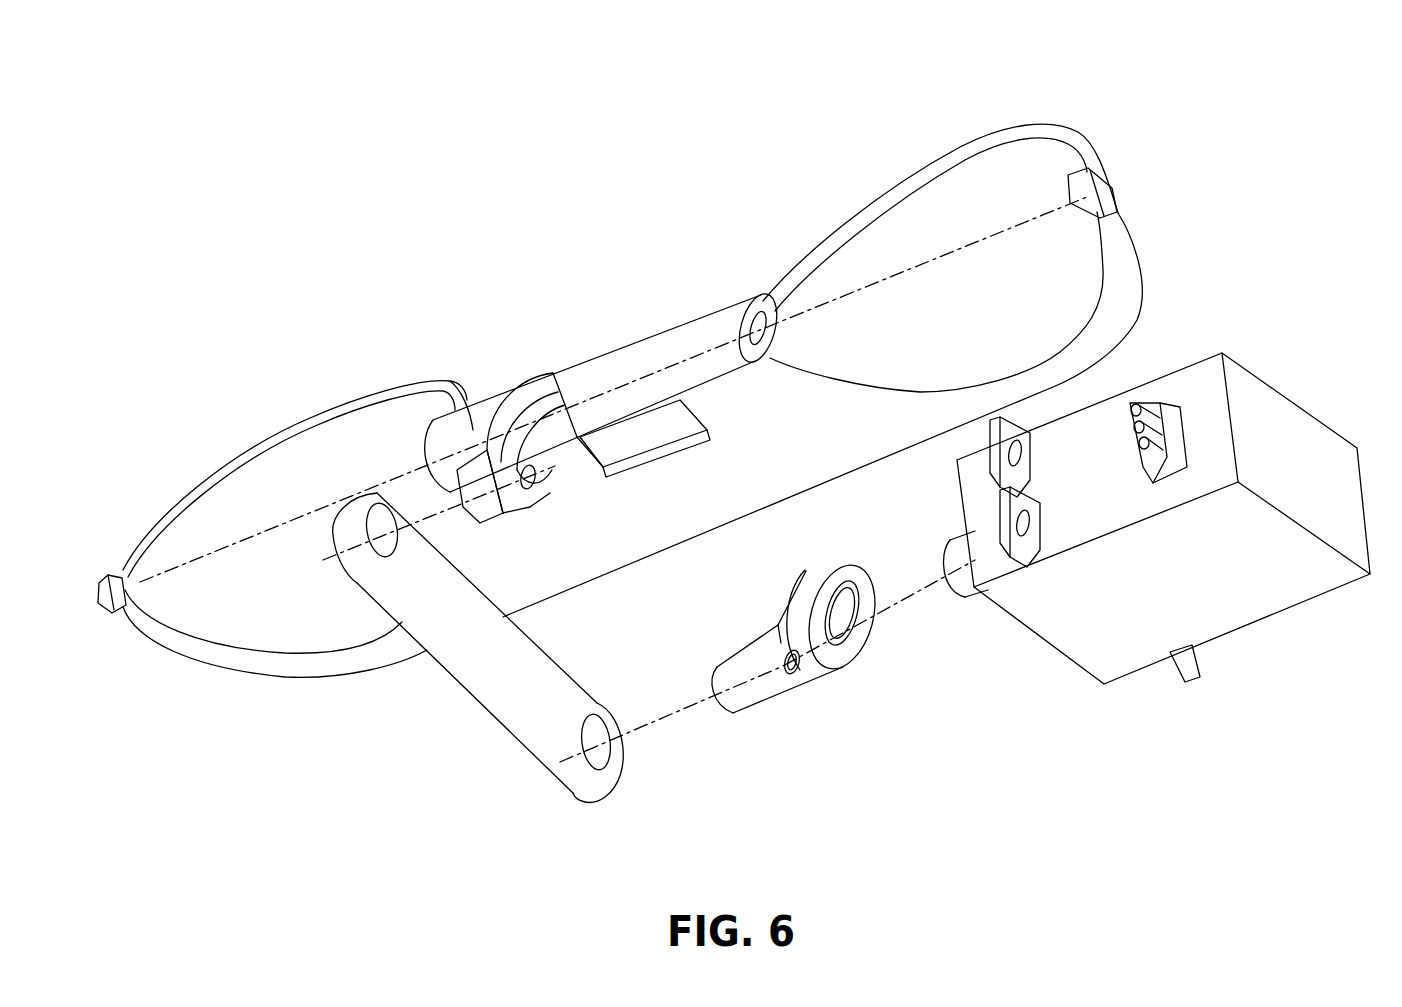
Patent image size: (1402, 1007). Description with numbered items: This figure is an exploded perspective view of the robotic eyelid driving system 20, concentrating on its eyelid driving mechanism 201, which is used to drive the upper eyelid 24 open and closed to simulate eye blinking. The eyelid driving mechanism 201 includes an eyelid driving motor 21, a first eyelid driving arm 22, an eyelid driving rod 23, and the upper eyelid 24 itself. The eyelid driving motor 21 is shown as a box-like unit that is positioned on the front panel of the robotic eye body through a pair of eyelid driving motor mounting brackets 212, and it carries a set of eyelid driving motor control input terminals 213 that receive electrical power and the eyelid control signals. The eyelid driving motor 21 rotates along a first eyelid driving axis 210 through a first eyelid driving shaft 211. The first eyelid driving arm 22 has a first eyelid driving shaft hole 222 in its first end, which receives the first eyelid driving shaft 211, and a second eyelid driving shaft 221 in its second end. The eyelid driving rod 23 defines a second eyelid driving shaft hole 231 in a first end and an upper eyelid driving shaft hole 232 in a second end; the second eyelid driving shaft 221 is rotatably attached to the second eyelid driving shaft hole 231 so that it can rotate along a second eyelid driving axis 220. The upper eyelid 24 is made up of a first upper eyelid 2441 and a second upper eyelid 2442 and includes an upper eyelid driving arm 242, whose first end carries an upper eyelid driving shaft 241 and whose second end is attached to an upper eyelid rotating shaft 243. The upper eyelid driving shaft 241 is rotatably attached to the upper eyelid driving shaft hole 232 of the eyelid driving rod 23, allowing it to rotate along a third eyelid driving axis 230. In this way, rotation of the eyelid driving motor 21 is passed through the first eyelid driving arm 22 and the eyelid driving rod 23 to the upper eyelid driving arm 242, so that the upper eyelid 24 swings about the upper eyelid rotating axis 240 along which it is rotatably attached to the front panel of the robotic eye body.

The robotic eyelid driving system 20 is at (143, 98).
The eyelid driving mechanism 201 is at (1106, 782).
The eyelid driving motor 21 is at (1103, 520).
The first eyelid driving axis 210 is at (927, 580).
The first eyelid driving shaft 211 is at (973, 580).
The eyelid driving motor mounting brackets 212 is at (1037, 547).
The eyelid driving motor control input terminals 213 is at (1160, 467).
The first eyelid driving arm 22 is at (763, 683).
The second eyelid driving axis 220 is at (695, 702).
The second eyelid driving shaft 221 is at (747, 700).
The first eyelid driving shaft hole 222 is at (837, 613).
The eyelid driving rod 23 is at (490, 643).
The third eyelid driving axis 230 is at (427, 513).
The second eyelid driving shaft hole 231 is at (603, 757).
The upper eyelid driving shaft hole 232 is at (387, 547).
The upper eyelid 24 is at (740, 483).
The upper eyelid rotating axis 240 is at (907, 270).
The upper eyelid driving shaft 241 is at (480, 503).
The upper eyelid driving arm 242 is at (553, 437).
The upper eyelid rotating shaft 243 is at (717, 363).
The first upper eyelid 2441 is at (310, 477).
The second upper eyelid 2442 is at (888, 238).